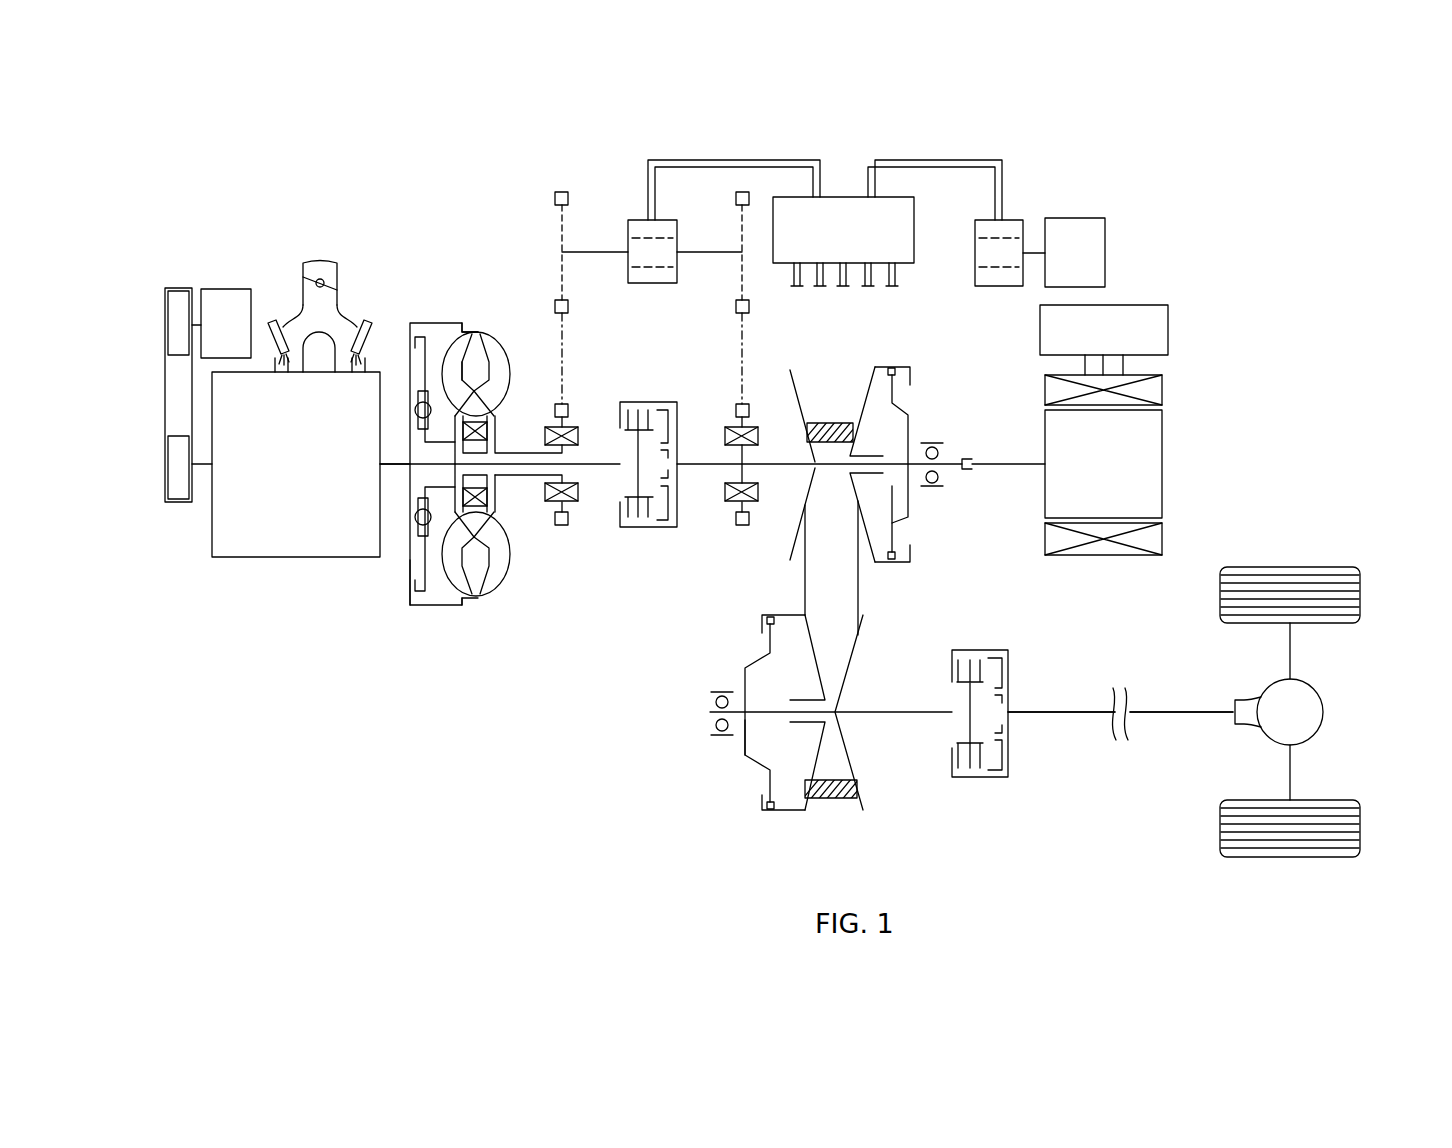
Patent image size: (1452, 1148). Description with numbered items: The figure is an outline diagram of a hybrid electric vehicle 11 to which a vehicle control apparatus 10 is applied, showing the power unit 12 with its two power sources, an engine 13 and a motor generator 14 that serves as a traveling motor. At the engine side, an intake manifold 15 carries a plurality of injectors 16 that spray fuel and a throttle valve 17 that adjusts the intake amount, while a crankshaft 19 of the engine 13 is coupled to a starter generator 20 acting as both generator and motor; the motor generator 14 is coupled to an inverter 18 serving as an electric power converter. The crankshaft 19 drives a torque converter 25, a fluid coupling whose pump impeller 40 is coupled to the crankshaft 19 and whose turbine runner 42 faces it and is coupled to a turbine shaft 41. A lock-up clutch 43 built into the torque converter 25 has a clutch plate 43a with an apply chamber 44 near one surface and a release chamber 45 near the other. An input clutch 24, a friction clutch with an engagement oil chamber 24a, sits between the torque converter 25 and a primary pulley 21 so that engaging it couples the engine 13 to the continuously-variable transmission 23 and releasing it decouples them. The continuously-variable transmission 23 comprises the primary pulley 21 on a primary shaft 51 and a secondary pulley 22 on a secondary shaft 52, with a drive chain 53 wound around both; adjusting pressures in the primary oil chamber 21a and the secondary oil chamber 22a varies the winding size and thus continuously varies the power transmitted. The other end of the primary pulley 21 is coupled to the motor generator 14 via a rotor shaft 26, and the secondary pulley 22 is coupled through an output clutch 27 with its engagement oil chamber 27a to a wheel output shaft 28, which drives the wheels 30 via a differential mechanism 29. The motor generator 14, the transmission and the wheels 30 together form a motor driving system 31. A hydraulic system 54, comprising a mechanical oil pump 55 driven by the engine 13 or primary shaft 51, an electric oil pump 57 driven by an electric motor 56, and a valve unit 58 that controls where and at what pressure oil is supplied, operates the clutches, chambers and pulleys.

The vehicle control apparatus 10 is at (262, 118).
The hybrid electric vehicle 11 is at (290, 172).
The power unit 12 is at (303, 633).
The engine 13 is at (212, 530).
The motor generator 14 is at (1155, 467).
The intake manifold 15 is at (322, 325).
The injectors 16 is at (270, 320).
The throttle valve 17 is at (310, 262).
The inverter 18 is at (1168, 328).
The crankshaft 19 is at (200, 464).
The starter generator 20 is at (226, 289).
The primary pulley 21 is at (912, 410).
The primary oil chamber 21a is at (898, 502).
The secondary pulley 22 is at (752, 800).
The secondary oil chamber 22a is at (745, 748).
The continuously-variable transmission 23 is at (740, 627).
The input clutch 24 is at (633, 398).
The engagement oil chamber 24a is at (665, 402).
The torque converter 25 is at (478, 325).
The rotor shaft 26 is at (1008, 464).
The output clutch 27 is at (966, 648).
The engagement oil chamber 27a is at (1002, 652).
The wheel output shaft 28 is at (1065, 712).
The differential mechanism 29 is at (1323, 712).
The wheels 30 is at (1360, 598).
The motor driving system 31 is at (1185, 412).
The pump impeller 40 is at (500, 365).
The turbine shaft 41 is at (598, 478).
The turbine runner 42 is at (455, 340).
The lock-up clutch 43 is at (416, 322).
The clutch plate 43a is at (420, 553).
The apply chamber 44 is at (440, 592).
The release chamber 45 is at (413, 572).
The primary shaft 51 is at (800, 470).
The secondary shaft 52 is at (883, 712).
The drive chain 53 is at (835, 423).
The hydraulic system 54 is at (998, 128).
The mechanical oil pump 55 is at (630, 213).
The electric motor 56 is at (1105, 250).
The electric oil pump 57 is at (1050, 200).
The valve unit 58 is at (915, 215).